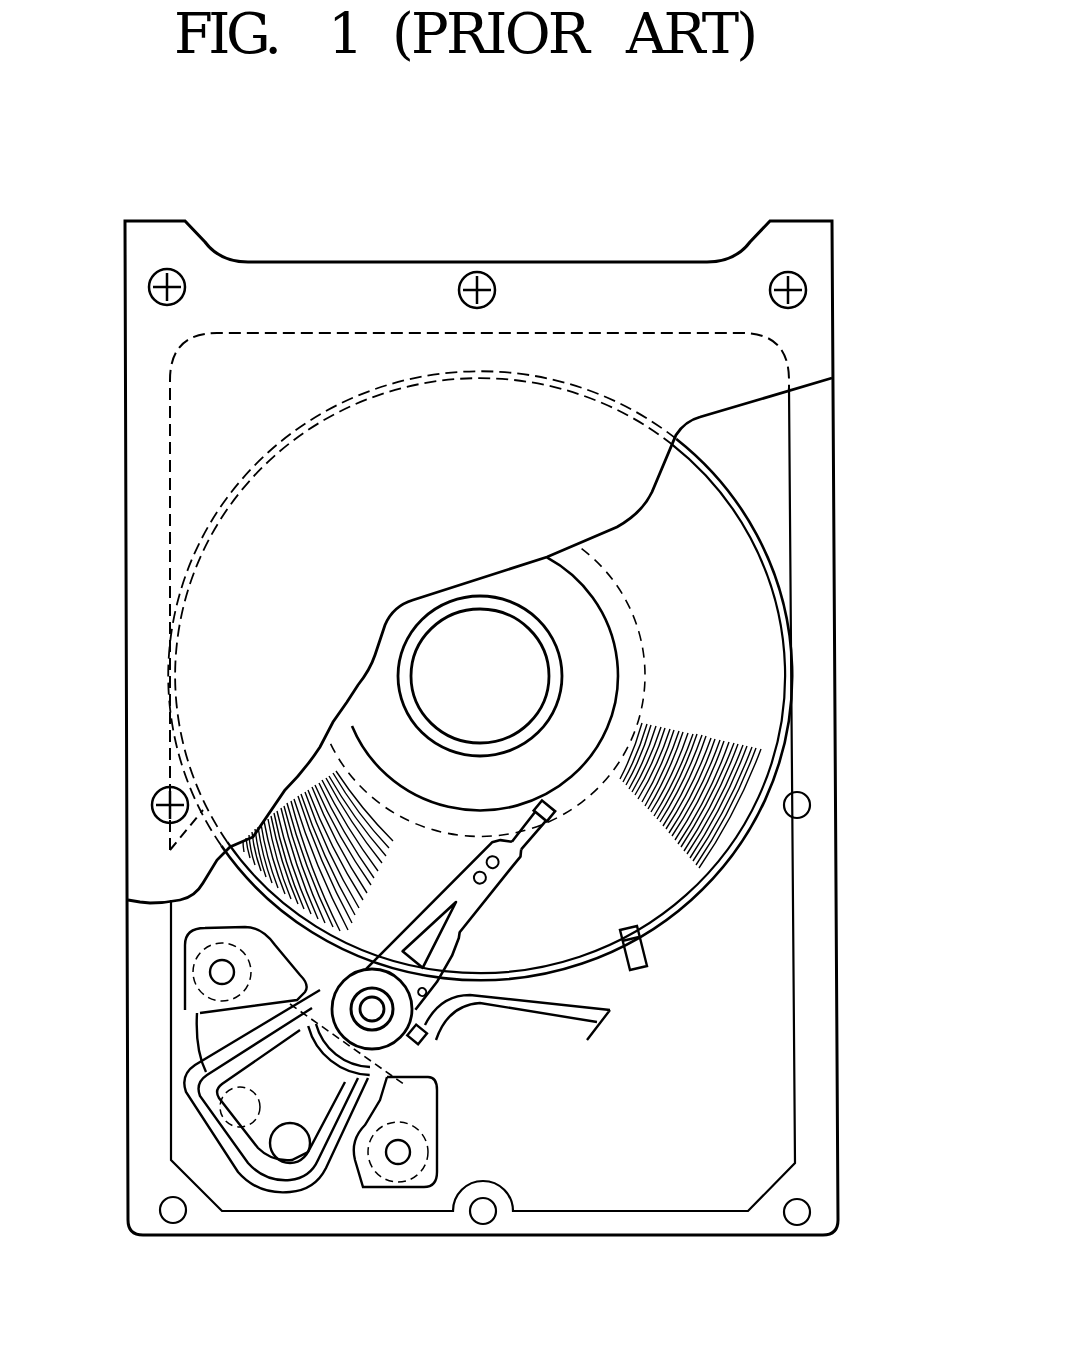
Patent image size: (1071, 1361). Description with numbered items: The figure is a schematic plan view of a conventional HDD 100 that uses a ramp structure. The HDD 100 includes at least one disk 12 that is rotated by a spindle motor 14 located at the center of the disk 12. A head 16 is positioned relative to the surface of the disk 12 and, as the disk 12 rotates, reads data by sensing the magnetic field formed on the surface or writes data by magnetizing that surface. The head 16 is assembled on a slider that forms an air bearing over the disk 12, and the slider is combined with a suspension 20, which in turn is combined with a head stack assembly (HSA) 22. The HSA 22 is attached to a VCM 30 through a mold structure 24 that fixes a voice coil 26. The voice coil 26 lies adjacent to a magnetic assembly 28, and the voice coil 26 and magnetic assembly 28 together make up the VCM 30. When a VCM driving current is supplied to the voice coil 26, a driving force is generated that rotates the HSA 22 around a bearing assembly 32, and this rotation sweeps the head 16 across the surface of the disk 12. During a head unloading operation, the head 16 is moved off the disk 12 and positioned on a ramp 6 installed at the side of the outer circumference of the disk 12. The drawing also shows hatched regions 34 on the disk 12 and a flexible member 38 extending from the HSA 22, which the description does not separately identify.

The HDD 100 is at (619, 179).
The disk 12 is at (748, 606).
The spindle motor 14 is at (453, 650).
The head 16 is at (540, 807).
The suspension 20 is at (530, 823).
The head stack assembly 22 is at (460, 922).
The mold structure 24 is at (280, 1028).
The voice coil 26 is at (217, 1098).
The magnetic assembly 28 is at (220, 1037).
The VCM 30 is at (317, 1100).
The bearing assembly 32 is at (387, 1022).
The data zone 34 is at (327, 790).
The flexible printed circuit 38 is at (550, 1008).
The ramp 6 is at (637, 966).